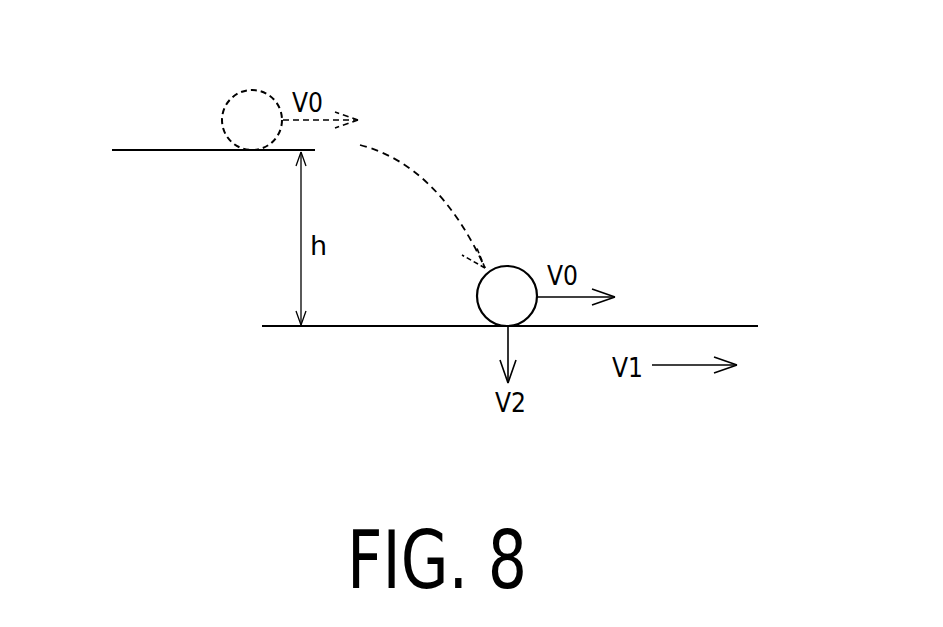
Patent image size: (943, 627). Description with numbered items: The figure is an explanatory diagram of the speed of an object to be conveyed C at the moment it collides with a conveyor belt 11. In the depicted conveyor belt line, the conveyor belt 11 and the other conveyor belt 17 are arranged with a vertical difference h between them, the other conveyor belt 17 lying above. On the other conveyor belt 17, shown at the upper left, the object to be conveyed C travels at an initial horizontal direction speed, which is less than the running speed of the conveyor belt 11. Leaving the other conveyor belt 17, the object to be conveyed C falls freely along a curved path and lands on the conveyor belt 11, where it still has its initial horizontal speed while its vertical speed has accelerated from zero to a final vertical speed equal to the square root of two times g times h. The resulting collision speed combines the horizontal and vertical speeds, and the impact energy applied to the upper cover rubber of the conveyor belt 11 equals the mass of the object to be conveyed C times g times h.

The other conveyor belt 17 is at (163, 146).
The conveyor belt 11 is at (413, 325).
The object to be conveyed C is at (258, 100).